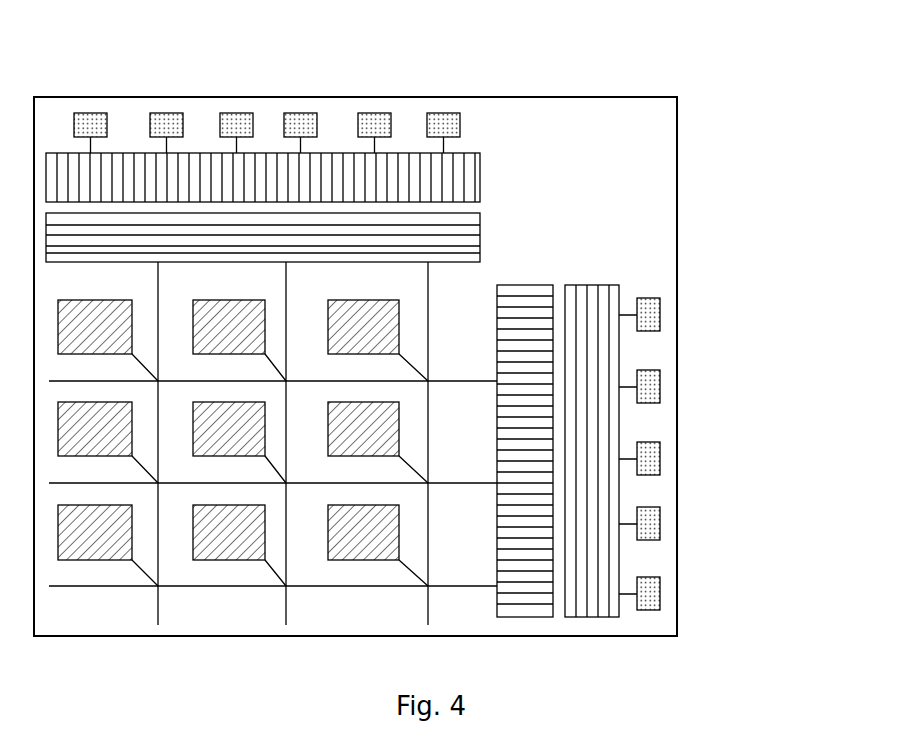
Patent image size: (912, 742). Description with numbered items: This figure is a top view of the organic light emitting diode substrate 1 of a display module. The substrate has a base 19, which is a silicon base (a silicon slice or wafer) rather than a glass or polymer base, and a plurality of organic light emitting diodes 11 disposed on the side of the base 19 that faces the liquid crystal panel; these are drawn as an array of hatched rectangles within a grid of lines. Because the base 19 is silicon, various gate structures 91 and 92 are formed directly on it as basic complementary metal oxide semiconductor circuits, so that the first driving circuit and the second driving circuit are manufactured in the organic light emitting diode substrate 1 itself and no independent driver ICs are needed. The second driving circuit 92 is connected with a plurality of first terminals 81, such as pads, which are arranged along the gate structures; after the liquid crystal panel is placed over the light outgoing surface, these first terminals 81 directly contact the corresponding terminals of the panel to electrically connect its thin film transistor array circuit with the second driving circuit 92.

The organic light emitting diode substrate 1 is at (424, 354).
The organic light emitting diodes 11 is at (372, 548).
The base 19 is at (640, 160).
The first terminals 81 is at (443, 122).
The gate structures 91 is at (443, 240).
The second driving circuit 92 is at (337, 168).